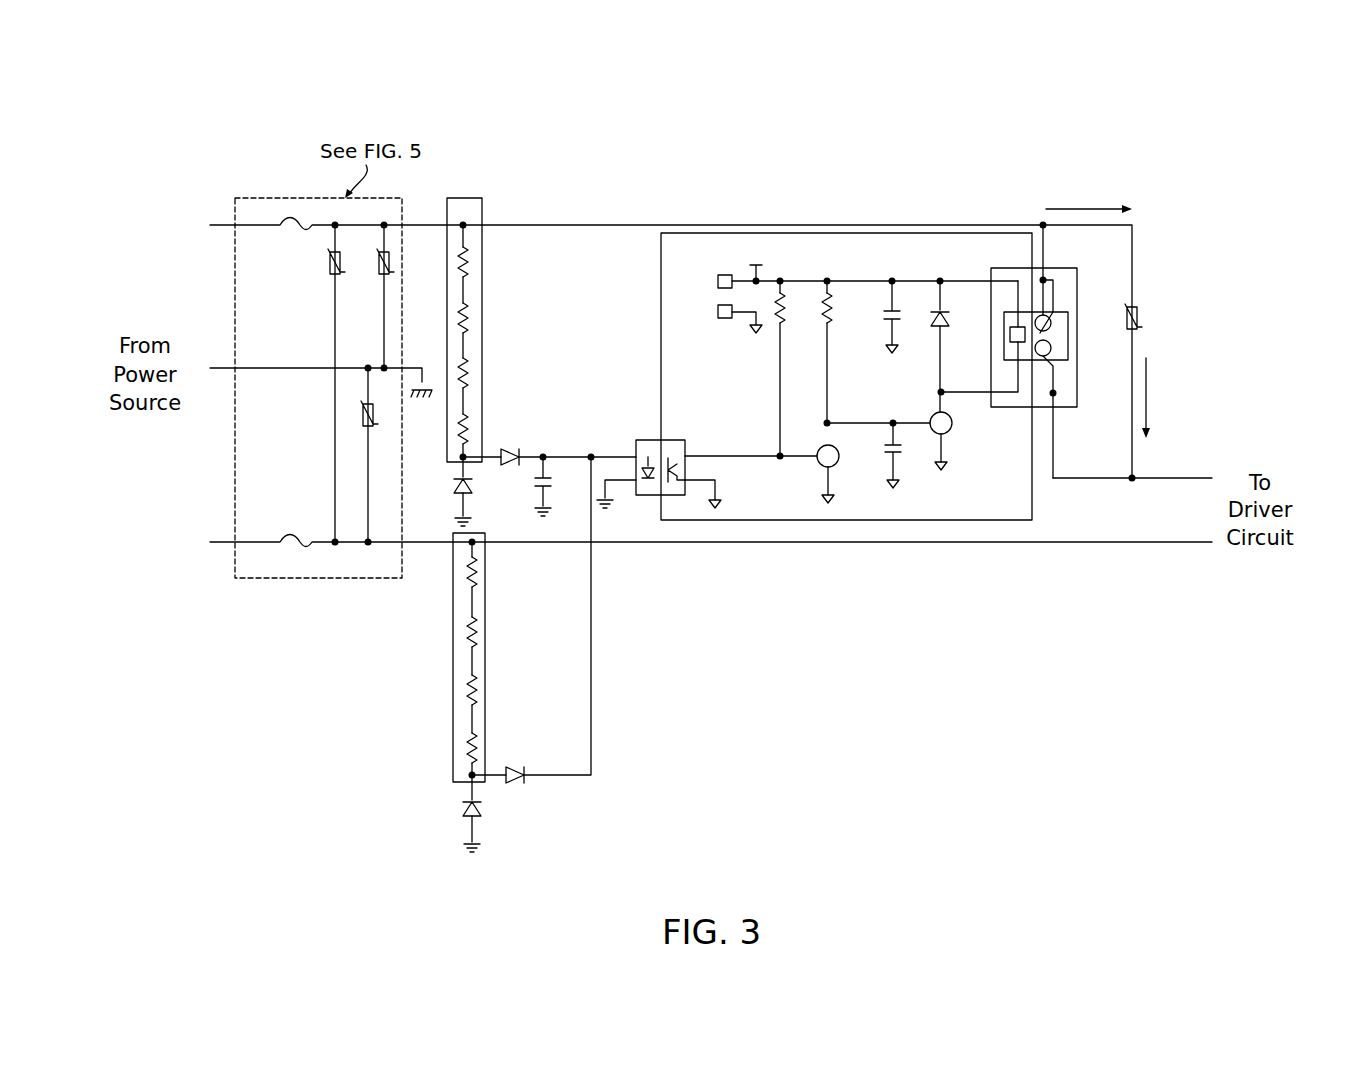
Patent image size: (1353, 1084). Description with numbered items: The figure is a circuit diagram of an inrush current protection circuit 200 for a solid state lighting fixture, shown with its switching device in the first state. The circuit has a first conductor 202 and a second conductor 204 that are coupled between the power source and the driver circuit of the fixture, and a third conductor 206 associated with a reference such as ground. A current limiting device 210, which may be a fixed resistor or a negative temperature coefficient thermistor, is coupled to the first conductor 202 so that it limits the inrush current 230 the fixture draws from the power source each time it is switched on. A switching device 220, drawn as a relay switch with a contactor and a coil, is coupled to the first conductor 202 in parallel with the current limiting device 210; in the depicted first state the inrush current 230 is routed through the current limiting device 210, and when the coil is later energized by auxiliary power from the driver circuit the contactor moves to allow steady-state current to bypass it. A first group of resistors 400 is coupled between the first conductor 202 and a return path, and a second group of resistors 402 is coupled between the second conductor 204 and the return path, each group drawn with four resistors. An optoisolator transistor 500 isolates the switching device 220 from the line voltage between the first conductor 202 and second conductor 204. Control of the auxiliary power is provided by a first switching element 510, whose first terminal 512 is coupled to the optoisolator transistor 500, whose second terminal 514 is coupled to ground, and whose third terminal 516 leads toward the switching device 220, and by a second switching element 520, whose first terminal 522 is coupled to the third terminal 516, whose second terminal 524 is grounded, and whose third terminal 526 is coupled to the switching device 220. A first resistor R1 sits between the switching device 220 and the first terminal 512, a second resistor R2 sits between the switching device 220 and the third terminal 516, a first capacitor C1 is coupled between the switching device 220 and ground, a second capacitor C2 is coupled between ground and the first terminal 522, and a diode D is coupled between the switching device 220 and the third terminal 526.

The inrush current protection circuit 200 is at (907, 138).
The first conductor 202 is at (251, 222).
The second conductor 204 is at (251, 540).
The third conductor 206 is at (260, 366).
The current limiting device 210 is at (1136, 306).
The switching device 220 is at (1053, 407).
The inrush current 230 is at (1075, 208).
The first group of resistors 400 is at (463, 198).
The second group of resistors 402 is at (447, 752).
The optoisolator transistor 500 is at (814, 376).
The first switching element 510 is at (818, 461).
The first terminal 512 is at (726, 453).
The second terminal 514 is at (832, 486).
The third terminal 516 is at (826, 417).
The second switching element 520 is at (952, 427).
The first terminal 522 is at (862, 421).
The second terminal 524 is at (948, 468).
The third terminal 526 is at (939, 392).
The first resistor R1 is at (786, 312).
The second resistor R2 is at (834, 312).
The first capacitor C1 is at (904, 312).
The second capacitor C2 is at (900, 455).
The diode D is at (948, 312).